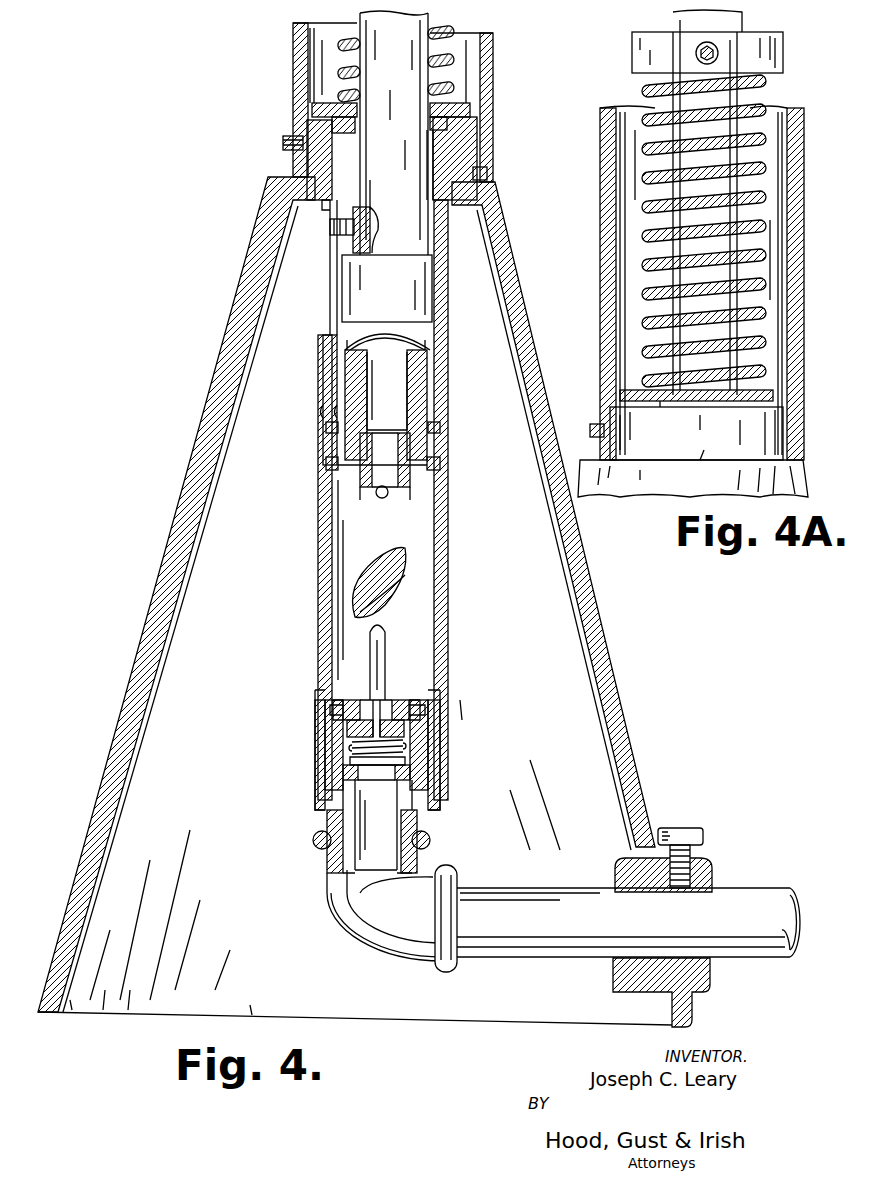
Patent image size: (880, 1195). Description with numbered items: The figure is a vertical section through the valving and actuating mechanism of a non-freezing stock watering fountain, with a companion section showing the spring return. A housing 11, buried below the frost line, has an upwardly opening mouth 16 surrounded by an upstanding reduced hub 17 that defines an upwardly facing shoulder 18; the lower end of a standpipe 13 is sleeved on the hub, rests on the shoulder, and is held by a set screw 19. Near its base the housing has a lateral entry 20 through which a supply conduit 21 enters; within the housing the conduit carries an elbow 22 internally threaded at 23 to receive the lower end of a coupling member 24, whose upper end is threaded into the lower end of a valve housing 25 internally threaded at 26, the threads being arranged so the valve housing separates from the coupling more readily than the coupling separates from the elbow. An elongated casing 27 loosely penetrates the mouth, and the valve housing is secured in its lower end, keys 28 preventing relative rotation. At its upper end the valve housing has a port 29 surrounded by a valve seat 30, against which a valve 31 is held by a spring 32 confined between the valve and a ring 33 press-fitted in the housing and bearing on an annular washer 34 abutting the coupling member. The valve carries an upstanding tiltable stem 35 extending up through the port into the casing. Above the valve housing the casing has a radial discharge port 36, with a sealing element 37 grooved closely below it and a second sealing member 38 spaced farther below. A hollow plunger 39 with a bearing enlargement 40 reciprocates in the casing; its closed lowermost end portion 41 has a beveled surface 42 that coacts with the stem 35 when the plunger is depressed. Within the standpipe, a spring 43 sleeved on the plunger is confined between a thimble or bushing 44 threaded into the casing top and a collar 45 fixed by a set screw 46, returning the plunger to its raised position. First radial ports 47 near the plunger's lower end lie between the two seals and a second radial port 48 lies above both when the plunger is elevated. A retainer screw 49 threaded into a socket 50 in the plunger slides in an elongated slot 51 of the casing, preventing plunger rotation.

In FIG. 4, the housing 11 is at (190, 452).
In FIG. 4A, the housing 11 is at (693, 478).
In FIG. 4, the standpipe 13 is at (495, 48).
In FIG. 4A, the standpipe 13 is at (600, 240).
In FIG. 4, the mouth 16 is at (433, 165).
In FIG. 4, the hub 17 is at (478, 133).
In FIG. 4A, the hub 17 is at (696, 433).
In FIG. 4, the shoulder 18 is at (488, 176).
In FIG. 4A, the shoulder 18 is at (700, 460).
In FIG. 4, the set screw 19 is at (288, 138).
In FIG. 4A, the set screw 19 is at (590, 428).
In FIG. 4, the lateral entry 20 is at (625, 887).
In FIG. 4, the supply conduit 21 is at (742, 888).
In FIG. 4, the elbow 22 is at (385, 950).
In FIG. 4, the internal threads of elbow 23 is at (400, 850).
In FIG. 4, the coupling member 24 is at (418, 825).
In FIG. 4, the valve housing 25 is at (438, 746).
In FIG. 4, the internal threads of valve housing 26 is at (396, 800).
In FIG. 4, the casing 27 is at (448, 566).
In FIG. 4A, the casing 27 is at (662, 410).
In FIG. 4, the keys 28 is at (425, 728).
In FIG. 4, the port 29 is at (392, 700).
In FIG. 4, the valve seat 30 is at (330, 715).
In FIG. 4, the valve 31 is at (426, 712).
In FIG. 4, the spring 32 is at (345, 741).
In FIG. 4, the ring 33 is at (436, 761).
In FIG. 4, the annular washer 34 is at (436, 776).
In FIG. 4, the tiltable stem 35 is at (372, 655).
In FIG. 4, the radial discharge port 36 is at (323, 410).
In FIG. 4, the sealing element 37 is at (441, 428).
In FIG. 4, the sealing member 38 is at (441, 463).
In FIG. 4, the plunger 39 is at (394, 133).
In FIG. 4A, the plunger 39 is at (715, 300).
In FIG. 4, the bearing enlargement 40 is at (387, 288).
In FIG. 4, the lowermost end portion 41 is at (413, 555).
In FIG. 4, the beveled surface 42 is at (390, 588).
In FIG. 4, the spring 43 is at (347, 40).
In FIG. 4A, the spring 43 is at (745, 218).
In FIG. 4, the thimble or bushing 44 is at (455, 103).
In FIG. 4A, the thimble or bushing 44 is at (766, 390).
In FIG. 4A, the collar 45 is at (632, 55).
In FIG. 4A, the set screw 46 is at (696, 52).
In FIG. 4, the first radial ports 47 is at (395, 495).
In FIG. 4, the second radial port 48 is at (372, 412).
In FIG. 4, the retainer screw 49 is at (330, 226).
In FIG. 4, the socket 50 is at (368, 216).
In FIG. 4, the elongated slot 51 is at (330, 318).